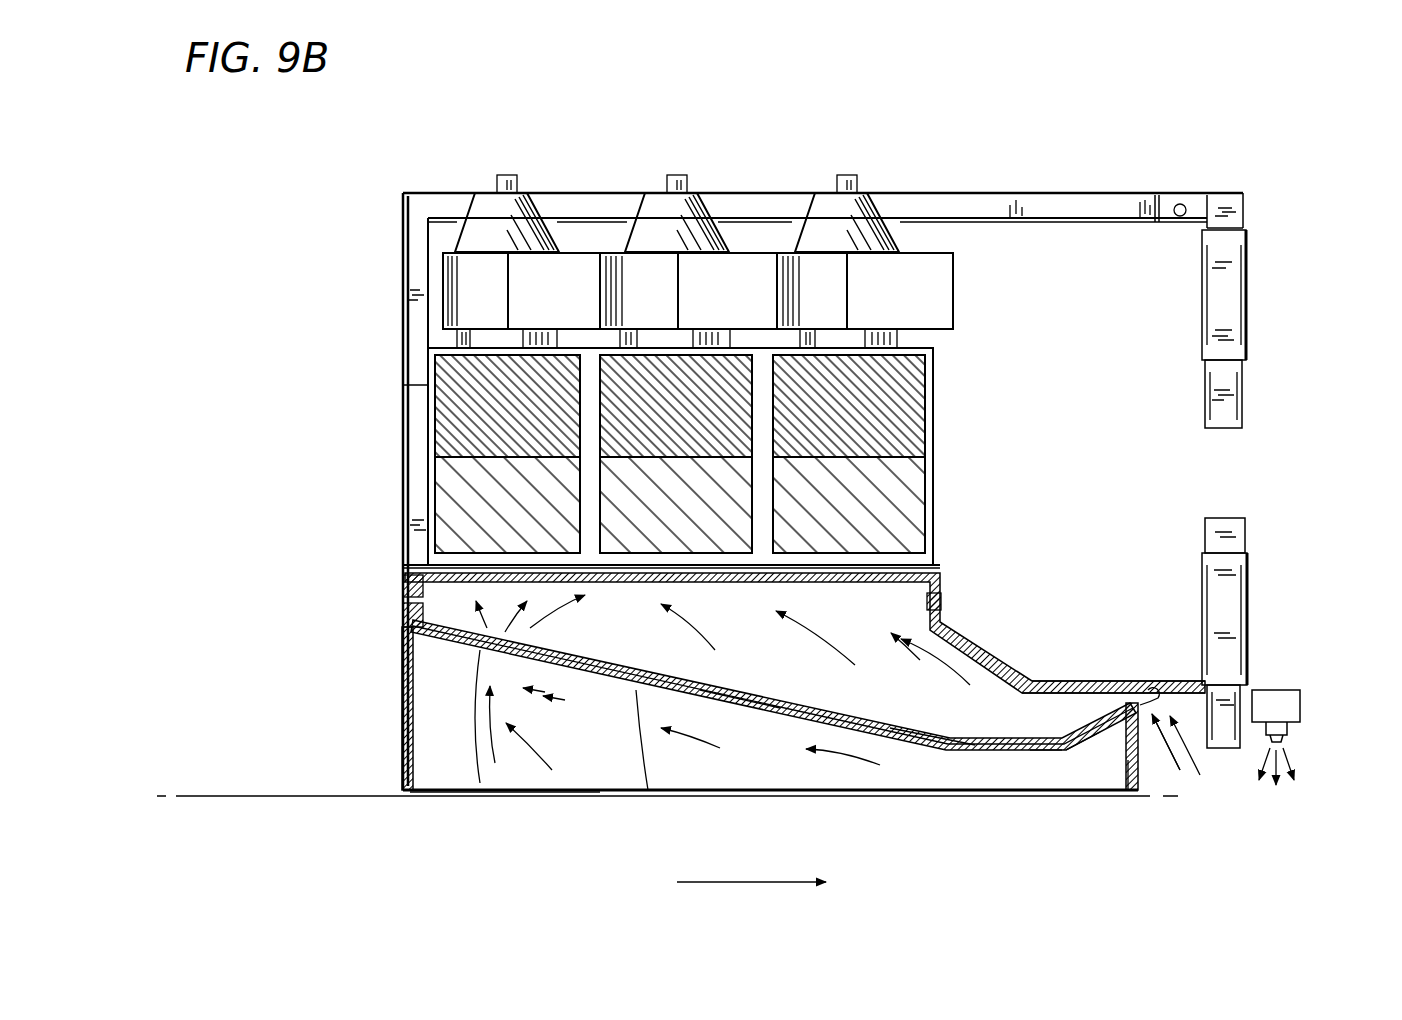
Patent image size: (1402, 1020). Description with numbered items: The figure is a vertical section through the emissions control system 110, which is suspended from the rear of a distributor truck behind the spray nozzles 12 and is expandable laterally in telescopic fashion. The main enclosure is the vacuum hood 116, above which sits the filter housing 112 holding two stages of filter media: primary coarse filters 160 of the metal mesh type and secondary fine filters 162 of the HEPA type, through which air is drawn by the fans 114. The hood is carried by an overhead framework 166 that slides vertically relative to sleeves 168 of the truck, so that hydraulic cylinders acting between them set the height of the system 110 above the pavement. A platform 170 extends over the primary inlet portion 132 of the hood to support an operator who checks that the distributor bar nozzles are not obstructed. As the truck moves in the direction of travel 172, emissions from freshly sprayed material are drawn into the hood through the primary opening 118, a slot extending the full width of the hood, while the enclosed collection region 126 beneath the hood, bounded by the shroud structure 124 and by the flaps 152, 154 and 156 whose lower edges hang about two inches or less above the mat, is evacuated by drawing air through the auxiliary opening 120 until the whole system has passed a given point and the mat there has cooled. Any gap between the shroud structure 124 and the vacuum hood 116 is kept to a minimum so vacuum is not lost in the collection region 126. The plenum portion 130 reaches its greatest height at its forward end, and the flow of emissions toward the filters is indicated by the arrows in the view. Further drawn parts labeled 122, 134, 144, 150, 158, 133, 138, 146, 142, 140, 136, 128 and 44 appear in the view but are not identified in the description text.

The emissions control system 110 is at (1085, 98).
The fans 114 is at (490, 200).
The blower housing 122 is at (570, 265).
The overhead framework 166 is at (1030, 195).
The sleeves 168 is at (1235, 283).
The filter housing 112 is at (415, 380).
The secondary filters 162 is at (482, 400).
The primary filters 160 is at (478, 468).
The partition 134 is at (433, 578).
The plate 150 is at (450, 578).
The platform 170 is at (1055, 683).
The vacuum hood 116 is at (398, 591).
The opening 144 is at (400, 608).
The flap 156 is at (410, 790).
The flap 152 is at (402, 790).
The ground 128 is at (217, 795).
The plenum portion 130 is at (748, 716).
The tray section 158 is at (808, 706).
The tray portion 133 is at (970, 748).
The primary inlet portion 132 is at (1045, 764).
The inclined tray portion 138 is at (1082, 738).
The flap 154 is at (1140, 770).
The primary opening 118 is at (1152, 688).
The spray gun 44 is at (1277, 690).
The nozzles 12 is at (1283, 741).
The shroud structure 124 is at (388, 696).
The upper air space 146 is at (560, 655).
The air flow 142 is at (542, 705).
The lower air space 140 is at (580, 693).
The auxiliary opening 120 is at (480, 783).
The collection region 126 is at (578, 768).
The air region 136 is at (648, 790).
The direction of travel 172 is at (730, 884).